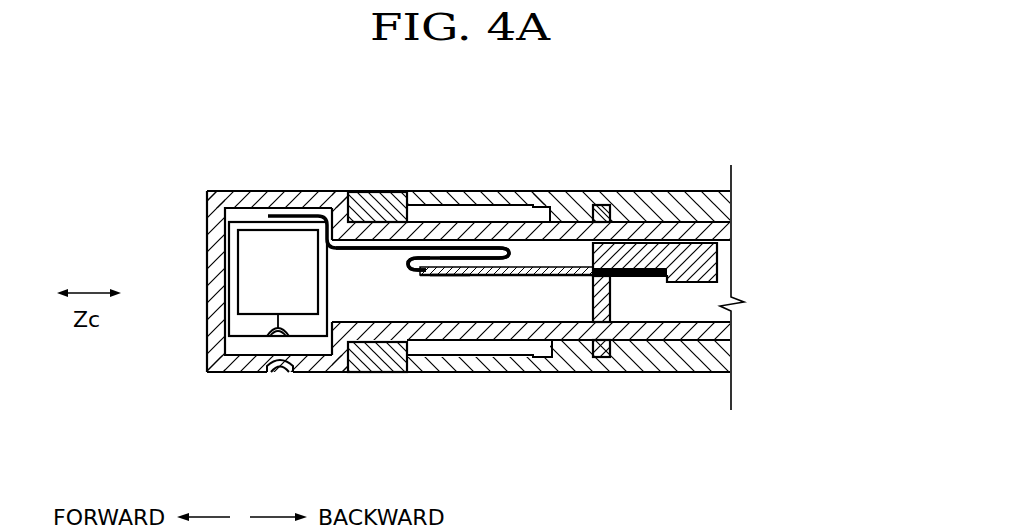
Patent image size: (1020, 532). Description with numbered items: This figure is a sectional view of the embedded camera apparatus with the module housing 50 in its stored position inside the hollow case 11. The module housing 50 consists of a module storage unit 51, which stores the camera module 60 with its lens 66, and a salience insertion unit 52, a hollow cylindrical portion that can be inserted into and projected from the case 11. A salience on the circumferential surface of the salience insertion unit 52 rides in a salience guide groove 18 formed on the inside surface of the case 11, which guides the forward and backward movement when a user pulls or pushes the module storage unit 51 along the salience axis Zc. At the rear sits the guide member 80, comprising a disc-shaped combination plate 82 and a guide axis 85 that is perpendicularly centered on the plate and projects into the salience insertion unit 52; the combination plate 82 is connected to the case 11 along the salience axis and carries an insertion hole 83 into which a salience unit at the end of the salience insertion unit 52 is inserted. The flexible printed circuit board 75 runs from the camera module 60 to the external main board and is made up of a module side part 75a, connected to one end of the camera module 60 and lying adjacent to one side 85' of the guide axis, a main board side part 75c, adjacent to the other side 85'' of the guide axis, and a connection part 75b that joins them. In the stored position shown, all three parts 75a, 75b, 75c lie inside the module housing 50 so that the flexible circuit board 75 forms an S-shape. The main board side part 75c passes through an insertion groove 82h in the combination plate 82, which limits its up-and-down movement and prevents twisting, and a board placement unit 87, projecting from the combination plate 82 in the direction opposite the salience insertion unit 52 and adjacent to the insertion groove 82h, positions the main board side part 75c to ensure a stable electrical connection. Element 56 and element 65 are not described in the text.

The module housing 50 is at (240, 186).
The module storage unit 51 is at (278, 193).
The salience insertion unit 52 is at (375, 193).
The bottom protrusion 56 is at (277, 374).
The camera module 60 is at (235, 317).
The lens 65 is at (250, 268).
The lens 66 is at (262, 333).
The flexible printed circuit board 75 is at (313, 198).
The module side part 75a is at (427, 246).
The connection part 75b is at (490, 256).
The main board side part 75c is at (418, 262).
The guide member 80 is at (636, 118).
The combination plate 82 is at (614, 250).
The insertion groove 82h is at (606, 355).
The insertion hole 83 is at (624, 245).
The guide axis 85 is at (506, 206).
The one side of the guide axis 85' is at (465, 198).
The other side of the guide axis 85'' is at (455, 377).
The board placement unit 87 is at (650, 278).
The case 11 is at (688, 192).
The salience guide groove 18 is at (480, 348).